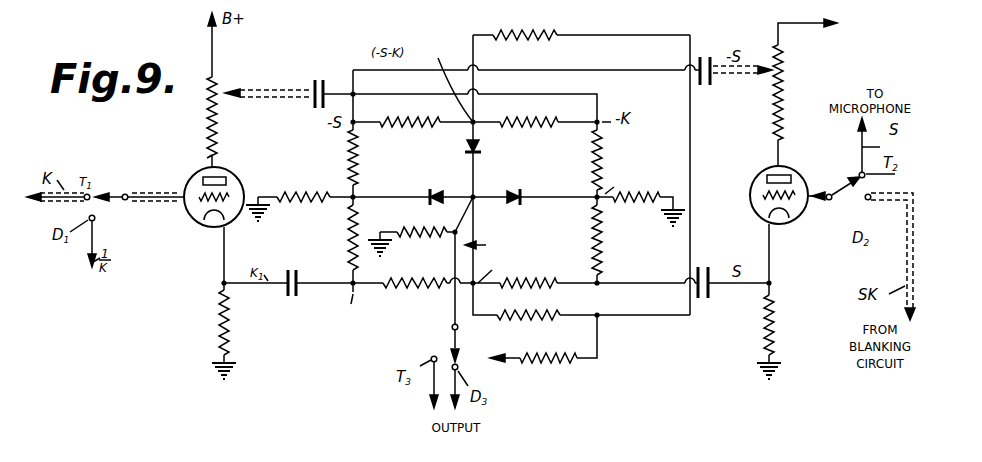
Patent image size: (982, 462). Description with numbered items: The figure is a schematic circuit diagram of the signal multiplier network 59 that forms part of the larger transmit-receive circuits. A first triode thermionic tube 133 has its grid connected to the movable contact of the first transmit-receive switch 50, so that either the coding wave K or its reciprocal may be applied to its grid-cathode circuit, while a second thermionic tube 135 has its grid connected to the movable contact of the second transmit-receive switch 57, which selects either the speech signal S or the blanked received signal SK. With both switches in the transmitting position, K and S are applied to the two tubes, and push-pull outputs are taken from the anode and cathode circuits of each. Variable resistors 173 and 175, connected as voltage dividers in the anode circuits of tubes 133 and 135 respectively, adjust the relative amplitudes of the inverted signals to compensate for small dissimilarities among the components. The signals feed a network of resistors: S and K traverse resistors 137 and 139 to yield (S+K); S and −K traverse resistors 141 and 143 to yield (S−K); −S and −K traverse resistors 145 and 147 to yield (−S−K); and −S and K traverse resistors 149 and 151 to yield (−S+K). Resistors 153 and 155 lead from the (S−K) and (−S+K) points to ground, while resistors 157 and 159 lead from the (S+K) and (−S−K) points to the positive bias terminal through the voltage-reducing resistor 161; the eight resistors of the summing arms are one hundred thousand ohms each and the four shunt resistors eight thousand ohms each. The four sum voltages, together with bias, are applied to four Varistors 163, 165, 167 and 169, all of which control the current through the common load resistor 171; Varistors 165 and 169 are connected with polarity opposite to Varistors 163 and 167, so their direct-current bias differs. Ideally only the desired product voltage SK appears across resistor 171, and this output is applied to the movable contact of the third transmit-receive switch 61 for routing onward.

The first transmit-receive switch 50 is at (117, 190).
The second transmit-receive switch 57 is at (850, 181).
The resistance network 59 is at (331, 350).
The third transmit-receive switch 61 is at (452, 336).
The first triode thermionic tube 133 is at (190, 181).
The second thermionic tube 135 is at (752, 205).
The resistor 137 is at (545, 278).
The resistor 139 is at (402, 280).
The resistor 141 is at (605, 252).
The resistor 143 is at (606, 140).
The resistor 145 is at (394, 128).
The resistor 147 is at (521, 129).
The resistor 149 is at (348, 138).
The resistor 151 is at (348, 240).
The resistor 153 is at (641, 206).
The resistor 155 is at (299, 204).
The resistor 157 is at (540, 314).
The resistor 159 is at (545, 33).
The voltage-reducing resistor 161 is at (578, 362).
The Varistor 163 is at (484, 246).
The Varistor 165 is at (425, 188).
The Varistor 167 is at (480, 154).
The Varistor 169 is at (525, 193).
The common load resistor 171 is at (405, 228).
The variable resistor 173 is at (205, 118).
The variable resistor 175 is at (782, 100).